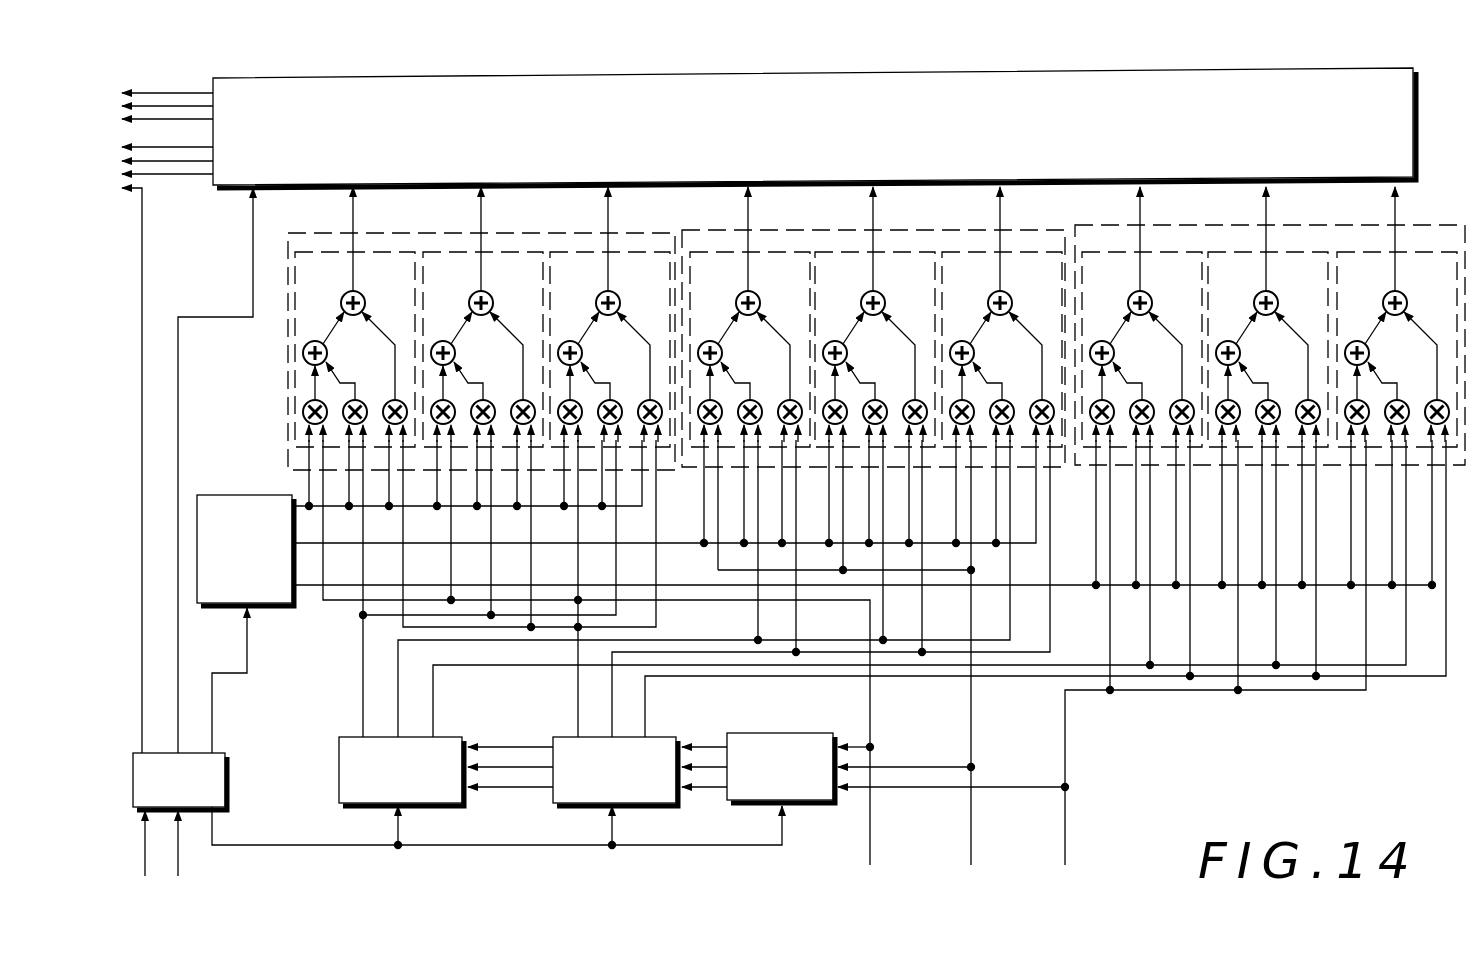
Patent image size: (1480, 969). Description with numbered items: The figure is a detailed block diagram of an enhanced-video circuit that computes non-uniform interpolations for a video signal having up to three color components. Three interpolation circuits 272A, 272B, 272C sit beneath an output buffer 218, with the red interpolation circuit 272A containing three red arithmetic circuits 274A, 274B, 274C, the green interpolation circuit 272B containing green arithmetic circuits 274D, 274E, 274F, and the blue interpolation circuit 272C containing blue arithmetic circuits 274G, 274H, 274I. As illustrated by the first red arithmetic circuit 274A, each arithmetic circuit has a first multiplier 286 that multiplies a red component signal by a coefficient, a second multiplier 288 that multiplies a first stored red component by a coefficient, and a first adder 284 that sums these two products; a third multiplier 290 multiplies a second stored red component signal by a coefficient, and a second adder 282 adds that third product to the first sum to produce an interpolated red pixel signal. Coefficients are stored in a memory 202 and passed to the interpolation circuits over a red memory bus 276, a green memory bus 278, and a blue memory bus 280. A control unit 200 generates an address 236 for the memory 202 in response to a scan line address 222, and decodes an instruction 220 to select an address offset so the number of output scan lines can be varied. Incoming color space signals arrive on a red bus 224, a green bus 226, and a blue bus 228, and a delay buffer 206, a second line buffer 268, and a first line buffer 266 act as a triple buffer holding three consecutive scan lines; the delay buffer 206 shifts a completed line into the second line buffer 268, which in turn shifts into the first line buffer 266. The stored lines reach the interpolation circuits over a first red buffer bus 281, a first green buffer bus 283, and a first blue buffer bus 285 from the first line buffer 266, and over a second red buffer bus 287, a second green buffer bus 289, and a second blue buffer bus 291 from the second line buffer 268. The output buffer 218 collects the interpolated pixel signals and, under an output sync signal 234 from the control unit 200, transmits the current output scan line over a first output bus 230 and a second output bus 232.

The output buffer 218 is at (492, 76).
The second output bus 232 is at (165, 84).
The first output bus 230 is at (167, 184).
The output sync signal 234 is at (143, 300).
The red interpolation circuit 272A is at (512, 233).
The green interpolation circuit 272B is at (902, 230).
The blue interpolation circuit 272C is at (1296, 226).
The first red arithmetic circuit 274A is at (345, 282).
The red arithmetic circuit 274B is at (473, 282).
The red arithmetic circuit 274C is at (600, 282).
The green arithmetic circuit 274D is at (740, 282).
The green arithmetic circuit 274E is at (865, 282).
The green arithmetic circuit 274F is at (992, 282).
The blue arithmetic circuit 274G is at (1132, 282).
The blue arithmetic circuit 274H is at (1258, 282).
The blue arithmetic circuit 274I is at (1387, 282).
The second adder 282 is at (360, 296).
The first adder 284 is at (312, 343).
The first multiplier 286 is at (303, 414).
The second multiplier 288 is at (351, 402).
The third multiplier 290 is at (396, 402).
The memory 202 is at (244, 494).
The red memory bus 276 is at (647, 492).
The green memory bus 278 is at (676, 546).
The blue memory bus 280 is at (309, 592).
The address 236 is at (248, 679).
The first red buffer bus 281 is at (363, 723).
The first green buffer bus 283 is at (398, 703).
The first blue buffer bus 285 is at (434, 712).
The second red buffer bus 287 is at (577, 718).
The second green buffer bus 289 is at (611, 706).
The second blue buffer bus 291 is at (647, 712).
The first line buffer 266 is at (339, 768).
The second line buffer 268 is at (560, 813).
The delay buffer 206 is at (779, 731).
The control unit 200 is at (229, 792).
The red bus 224 is at (869, 828).
The green bus 226 is at (976, 832).
The blue bus 228 is at (1067, 824).
The instruction 220 is at (146, 868).
The scan line address 222 is at (180, 860).